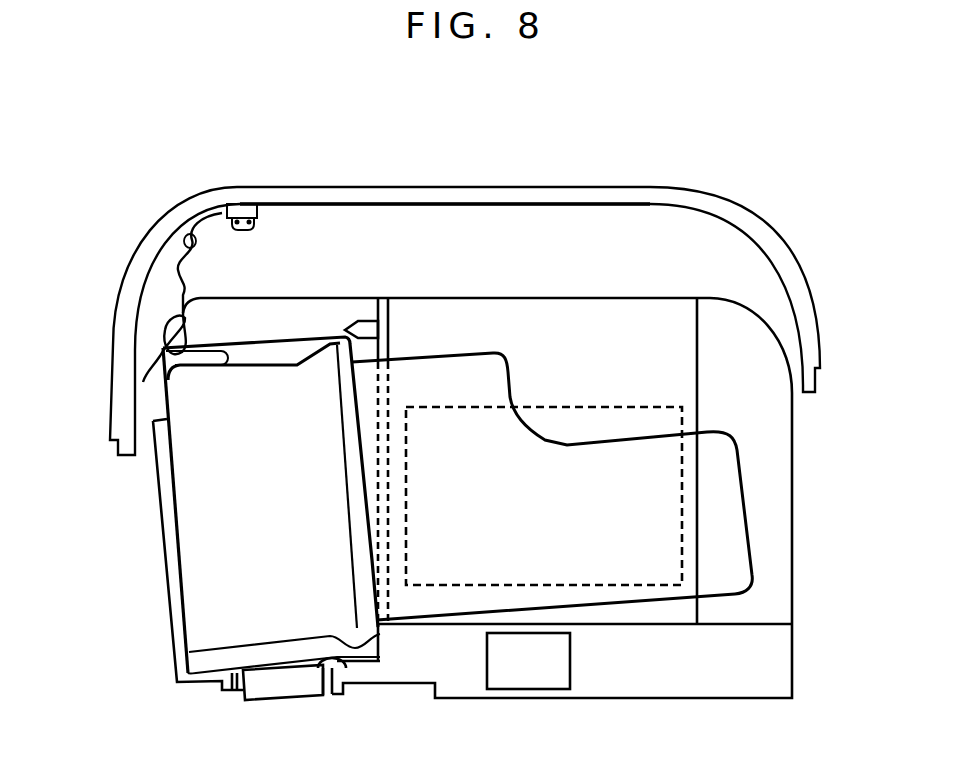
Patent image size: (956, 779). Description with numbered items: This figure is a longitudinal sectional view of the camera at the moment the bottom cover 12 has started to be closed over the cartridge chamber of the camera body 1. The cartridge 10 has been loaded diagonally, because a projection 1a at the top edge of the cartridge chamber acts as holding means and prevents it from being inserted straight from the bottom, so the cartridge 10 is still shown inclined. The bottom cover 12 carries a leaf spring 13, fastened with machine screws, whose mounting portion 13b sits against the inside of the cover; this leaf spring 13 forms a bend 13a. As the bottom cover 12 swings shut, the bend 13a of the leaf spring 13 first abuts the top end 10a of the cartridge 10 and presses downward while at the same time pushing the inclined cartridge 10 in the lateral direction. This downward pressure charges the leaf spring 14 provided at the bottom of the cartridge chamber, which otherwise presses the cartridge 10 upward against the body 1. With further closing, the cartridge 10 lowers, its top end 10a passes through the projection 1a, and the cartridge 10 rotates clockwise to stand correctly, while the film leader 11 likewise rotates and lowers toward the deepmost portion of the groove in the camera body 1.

The camera body 1 is at (782, 667).
The projection 1a is at (368, 320).
The cartridge 10 is at (188, 542).
The top end of the cartridge 10a is at (163, 352).
The film leader 11 is at (737, 521).
The bottom cover 12 is at (452, 196).
The leaf spring 13 is at (195, 228).
The bend 13a is at (183, 265).
The spring mounting base 13b is at (257, 240).
The leaf spring 14 is at (321, 697).